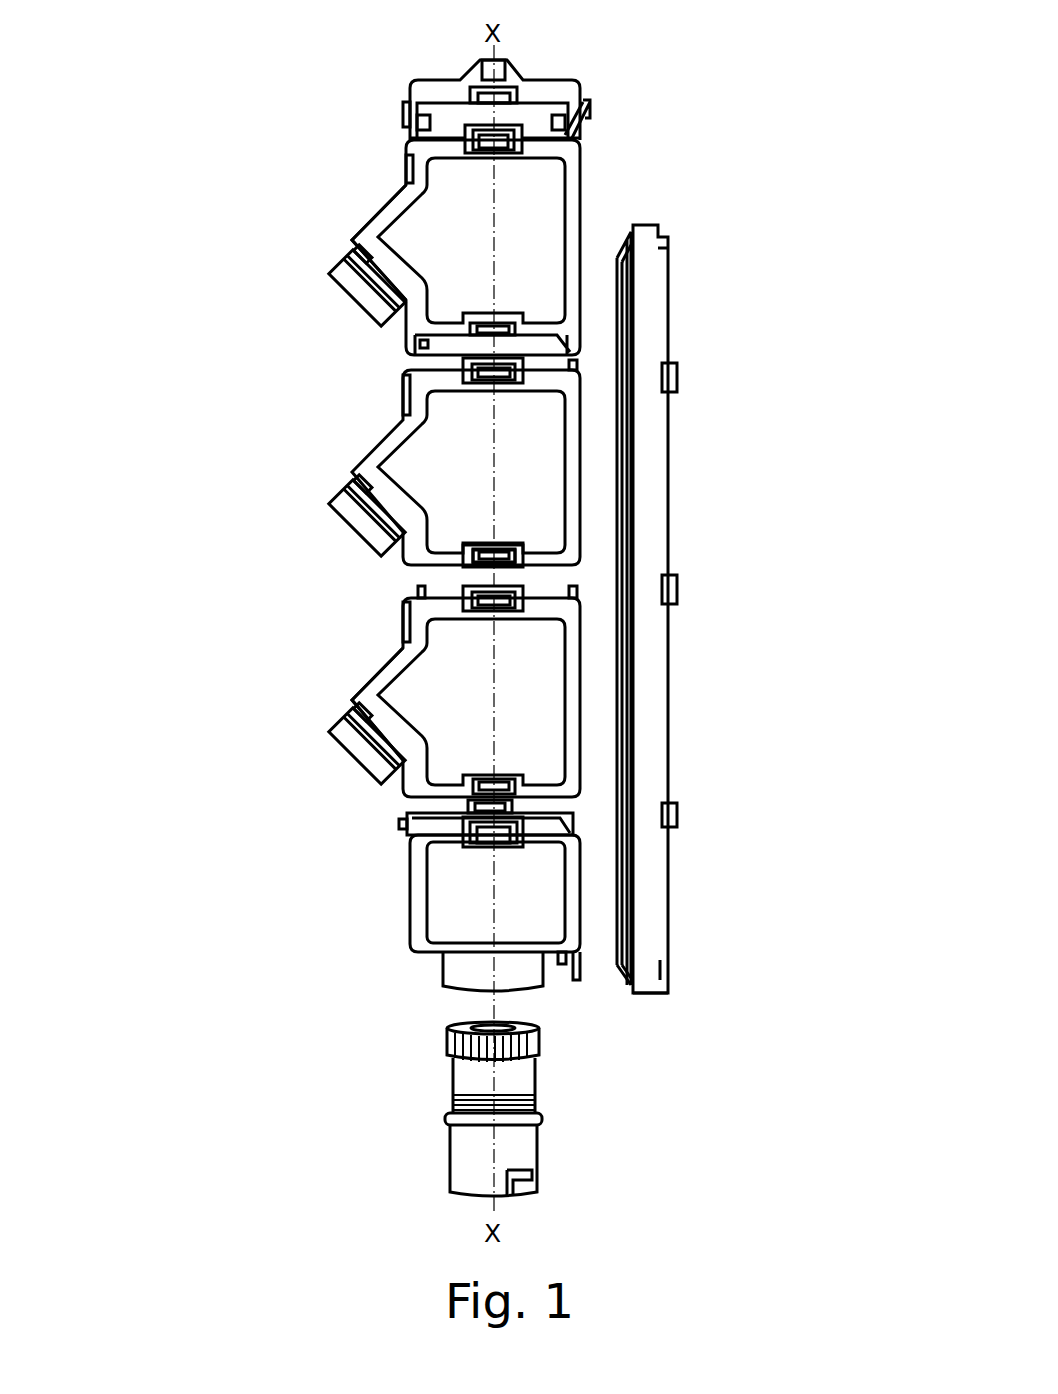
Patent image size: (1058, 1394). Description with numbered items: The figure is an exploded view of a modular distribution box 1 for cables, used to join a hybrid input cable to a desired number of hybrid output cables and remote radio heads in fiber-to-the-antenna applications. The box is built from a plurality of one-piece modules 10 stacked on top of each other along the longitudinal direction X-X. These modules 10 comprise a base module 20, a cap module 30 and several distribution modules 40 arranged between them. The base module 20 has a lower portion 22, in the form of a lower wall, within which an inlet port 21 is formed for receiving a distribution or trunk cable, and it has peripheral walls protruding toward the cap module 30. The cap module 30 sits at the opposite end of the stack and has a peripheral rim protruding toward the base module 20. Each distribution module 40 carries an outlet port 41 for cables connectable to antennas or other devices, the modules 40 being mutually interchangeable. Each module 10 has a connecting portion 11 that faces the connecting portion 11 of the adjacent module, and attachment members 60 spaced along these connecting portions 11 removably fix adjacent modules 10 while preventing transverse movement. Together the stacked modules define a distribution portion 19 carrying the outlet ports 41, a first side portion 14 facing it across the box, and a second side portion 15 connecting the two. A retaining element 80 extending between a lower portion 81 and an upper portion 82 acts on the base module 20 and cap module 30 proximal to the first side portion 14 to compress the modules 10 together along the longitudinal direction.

The distribution box 1 is at (288, 90).
The module 10 is at (353, 425).
The connecting portion 11 is at (567, 346).
The first side portion 14 is at (582, 680).
The second side portion 15 is at (540, 205).
The distribution portion 19 is at (304, 531).
The base module 20 is at (397, 906).
The inlet port 21 is at (462, 972).
The lower portion 22 is at (563, 968).
The cap module 30 is at (560, 74).
The distribution module 40 is at (354, 195).
The outlet port 41 is at (340, 272).
The attachment member 60 is at (467, 122).
The retaining element 80 is at (684, 434).
The lower portion 81 is at (630, 233).
The upper portion 82 is at (650, 987).